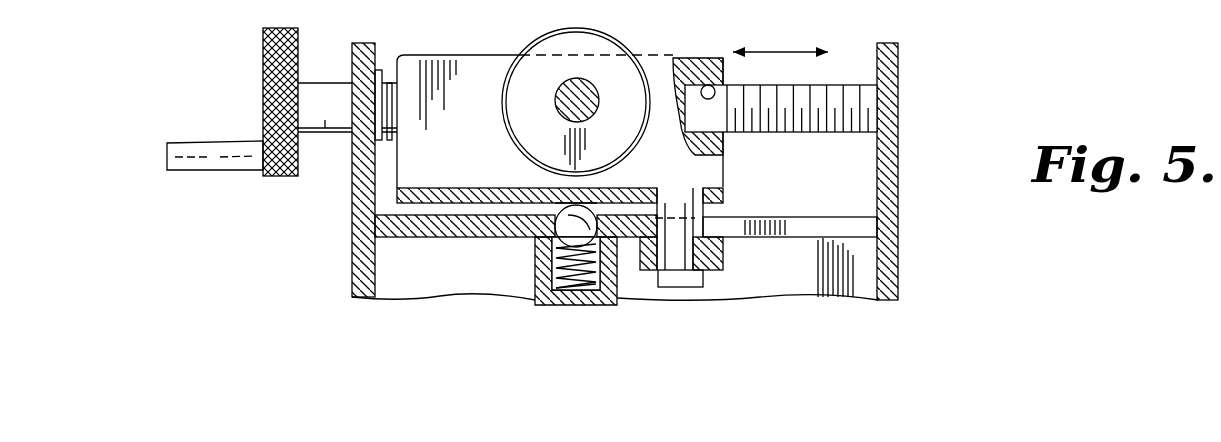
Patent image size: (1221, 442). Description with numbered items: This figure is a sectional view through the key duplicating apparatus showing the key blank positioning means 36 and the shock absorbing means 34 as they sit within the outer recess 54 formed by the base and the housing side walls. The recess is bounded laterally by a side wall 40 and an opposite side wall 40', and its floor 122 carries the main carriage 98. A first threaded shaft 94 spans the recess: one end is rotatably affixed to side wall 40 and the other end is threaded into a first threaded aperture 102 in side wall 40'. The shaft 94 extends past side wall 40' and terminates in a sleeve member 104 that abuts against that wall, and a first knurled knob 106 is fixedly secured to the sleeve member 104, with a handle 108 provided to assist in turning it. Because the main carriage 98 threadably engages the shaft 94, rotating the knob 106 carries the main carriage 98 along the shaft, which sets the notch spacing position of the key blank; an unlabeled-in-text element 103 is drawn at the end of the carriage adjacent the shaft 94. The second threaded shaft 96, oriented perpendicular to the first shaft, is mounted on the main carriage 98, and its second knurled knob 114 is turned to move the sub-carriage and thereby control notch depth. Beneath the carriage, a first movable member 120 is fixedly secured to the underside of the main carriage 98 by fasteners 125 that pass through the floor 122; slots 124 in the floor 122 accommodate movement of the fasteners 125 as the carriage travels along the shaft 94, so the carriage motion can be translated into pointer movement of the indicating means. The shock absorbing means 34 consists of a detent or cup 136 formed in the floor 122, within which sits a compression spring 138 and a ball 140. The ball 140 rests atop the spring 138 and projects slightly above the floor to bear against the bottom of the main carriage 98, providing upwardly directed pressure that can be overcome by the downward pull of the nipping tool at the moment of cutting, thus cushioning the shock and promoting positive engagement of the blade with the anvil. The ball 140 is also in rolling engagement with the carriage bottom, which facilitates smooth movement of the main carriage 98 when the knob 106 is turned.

The shock absorbing means 34 is at (508, 284).
The key blank positioning means 36 is at (860, 191).
The side wall 40 is at (933, 171).
The side wall 40' is at (319, 170).
The outer recess 54 is at (795, 164).
The first threaded shaft 94 is at (838, 85).
The second threaded shaft 96 is at (567, 85).
The main carriage 98 is at (417, 80).
The first threaded aperture 102 is at (360, 88).
The slide bracket 103 is at (697, 62).
The sleeve member 104 is at (325, 120).
The first knurled knob 106 is at (272, 73).
The handle 108 is at (167, 150).
The second knurled knob 114 is at (622, 68).
The first movable member 120 is at (720, 255).
The floor 122 is at (376, 246).
The slots 124 is at (838, 228).
The fasteners 125 is at (713, 220).
The detent or cup 136 is at (535, 256).
The compression spring 138 is at (547, 188).
The ball 140 is at (598, 186).